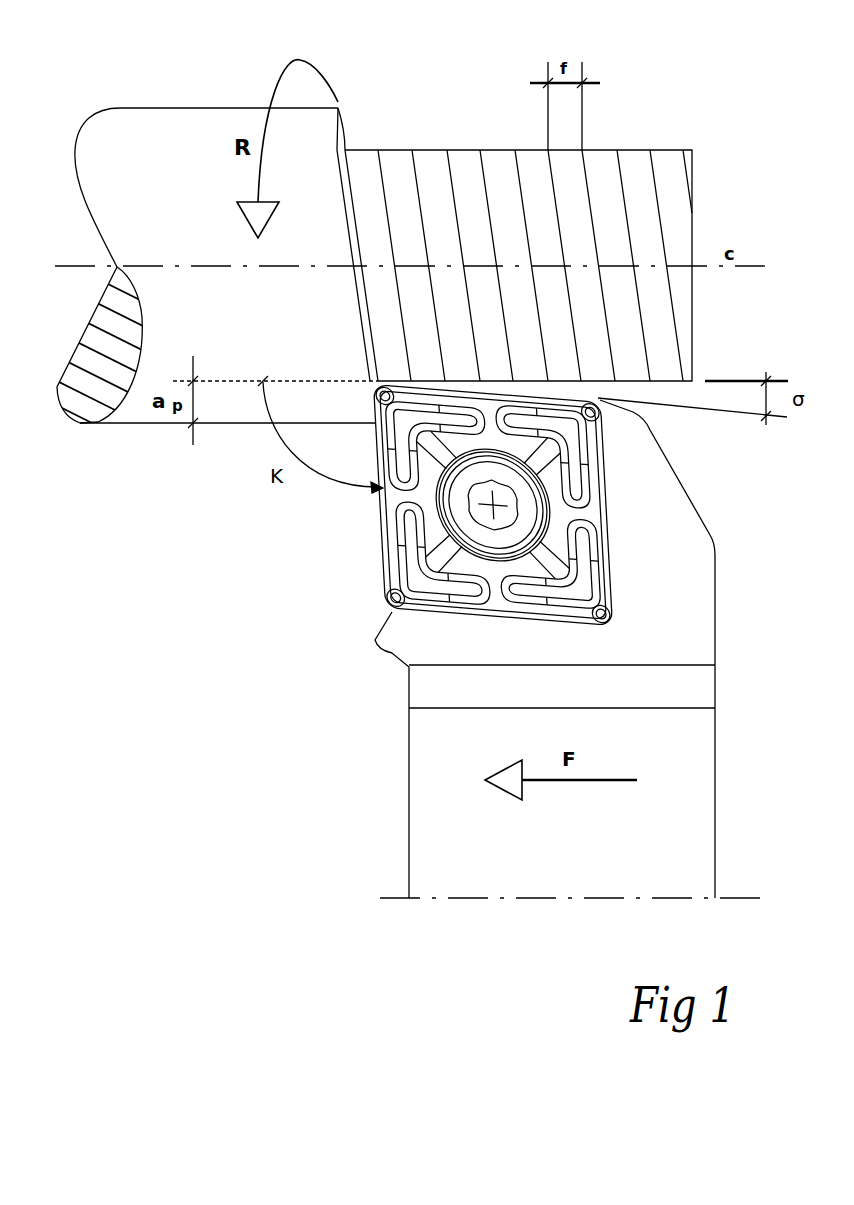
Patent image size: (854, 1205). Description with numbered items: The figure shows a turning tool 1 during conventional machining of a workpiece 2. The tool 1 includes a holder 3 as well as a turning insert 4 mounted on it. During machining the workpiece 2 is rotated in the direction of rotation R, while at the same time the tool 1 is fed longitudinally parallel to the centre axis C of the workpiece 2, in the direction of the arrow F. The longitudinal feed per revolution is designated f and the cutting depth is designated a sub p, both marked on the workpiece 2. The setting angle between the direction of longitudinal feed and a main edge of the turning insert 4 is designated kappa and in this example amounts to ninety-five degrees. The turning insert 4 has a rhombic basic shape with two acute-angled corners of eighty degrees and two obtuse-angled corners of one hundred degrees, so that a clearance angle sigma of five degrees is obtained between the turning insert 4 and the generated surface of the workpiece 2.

The turning tool 1 is at (720, 744).
The workpiece 2 is at (190, 122).
The holder 3 is at (422, 836).
The turning insert 4 is at (612, 541).